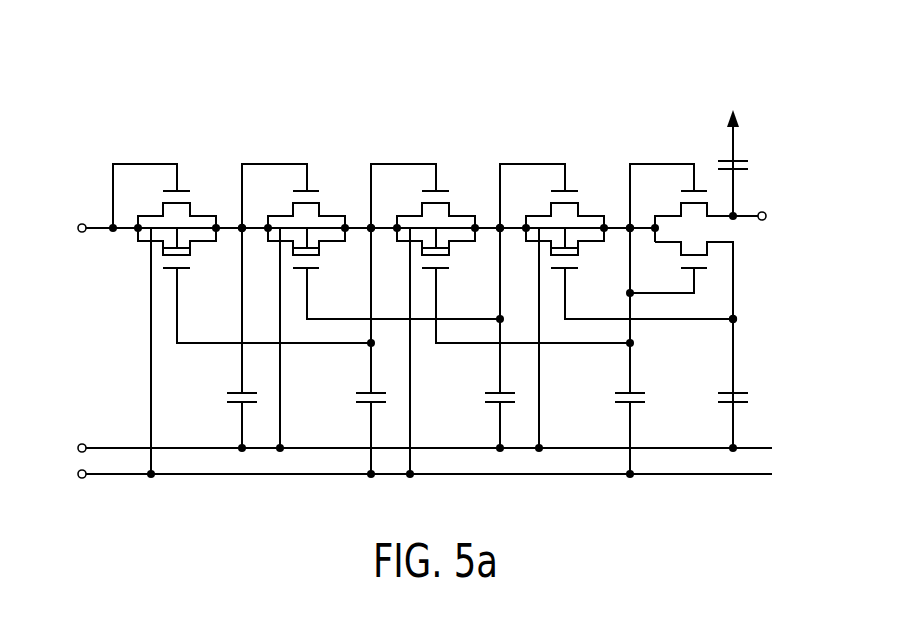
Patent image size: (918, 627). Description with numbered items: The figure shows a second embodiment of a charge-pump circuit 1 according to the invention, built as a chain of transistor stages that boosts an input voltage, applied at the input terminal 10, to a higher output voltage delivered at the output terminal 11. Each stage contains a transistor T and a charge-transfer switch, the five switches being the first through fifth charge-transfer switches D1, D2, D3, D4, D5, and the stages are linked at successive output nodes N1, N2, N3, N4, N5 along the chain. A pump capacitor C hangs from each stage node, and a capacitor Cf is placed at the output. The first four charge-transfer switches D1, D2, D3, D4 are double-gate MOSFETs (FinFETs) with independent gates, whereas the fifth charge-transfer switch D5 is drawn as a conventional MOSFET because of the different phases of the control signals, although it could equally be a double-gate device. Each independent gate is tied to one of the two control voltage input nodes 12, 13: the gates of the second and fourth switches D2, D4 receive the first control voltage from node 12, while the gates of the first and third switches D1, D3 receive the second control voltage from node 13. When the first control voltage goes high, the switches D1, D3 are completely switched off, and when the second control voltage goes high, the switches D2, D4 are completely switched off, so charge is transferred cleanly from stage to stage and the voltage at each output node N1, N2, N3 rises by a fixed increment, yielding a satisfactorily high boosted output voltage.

The charge-pump circuit 1 is at (633, 84).
The input terminal 10 is at (80, 226).
The output terminal 11 is at (766, 213).
The control voltage input node 12 is at (80, 446).
The control voltage input node 13 is at (84, 477).
The transistor T is at (180, 190).
The charge-transfer switch D1 is at (182, 269).
The charge-transfer switch D2 is at (312, 269).
The charge-transfer switch D3 is at (441, 269).
The charge-transfer switch D4 is at (570, 269).
The charge-transfer switch D5 is at (699, 269).
The output node N1 is at (242, 231).
The output node N2 is at (371, 231).
The output node N3 is at (500, 231).
The node 4 N4 is at (630, 231).
The node 5 N5 is at (736, 321).
The pump capacitor C is at (230, 392).
The filter capacitor Cf is at (738, 160).